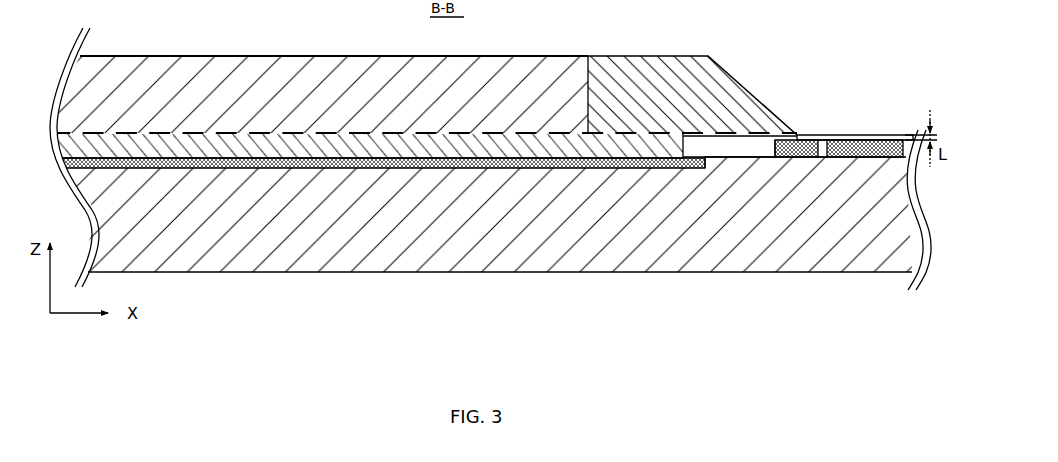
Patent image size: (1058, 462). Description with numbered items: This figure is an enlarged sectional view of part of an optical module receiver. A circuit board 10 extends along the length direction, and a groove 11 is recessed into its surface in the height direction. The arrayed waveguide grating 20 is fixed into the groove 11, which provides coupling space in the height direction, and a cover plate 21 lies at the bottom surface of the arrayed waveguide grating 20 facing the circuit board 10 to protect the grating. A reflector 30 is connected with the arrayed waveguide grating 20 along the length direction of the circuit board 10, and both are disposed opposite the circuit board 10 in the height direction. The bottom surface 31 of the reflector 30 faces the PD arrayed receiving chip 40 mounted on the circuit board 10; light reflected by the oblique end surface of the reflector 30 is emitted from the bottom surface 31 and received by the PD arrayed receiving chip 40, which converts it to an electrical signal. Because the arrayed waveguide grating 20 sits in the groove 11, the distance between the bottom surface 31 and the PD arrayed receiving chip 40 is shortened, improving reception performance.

The circuit board 10 is at (573, 237).
The groove 11 is at (423, 165).
The arrayed waveguide grating 20 is at (347, 83).
The cover plate 21 is at (188, 152).
The reflector 30 is at (656, 90).
The bottom surface 31 is at (735, 141).
The PD arrayed receiving chip 40 is at (790, 137).